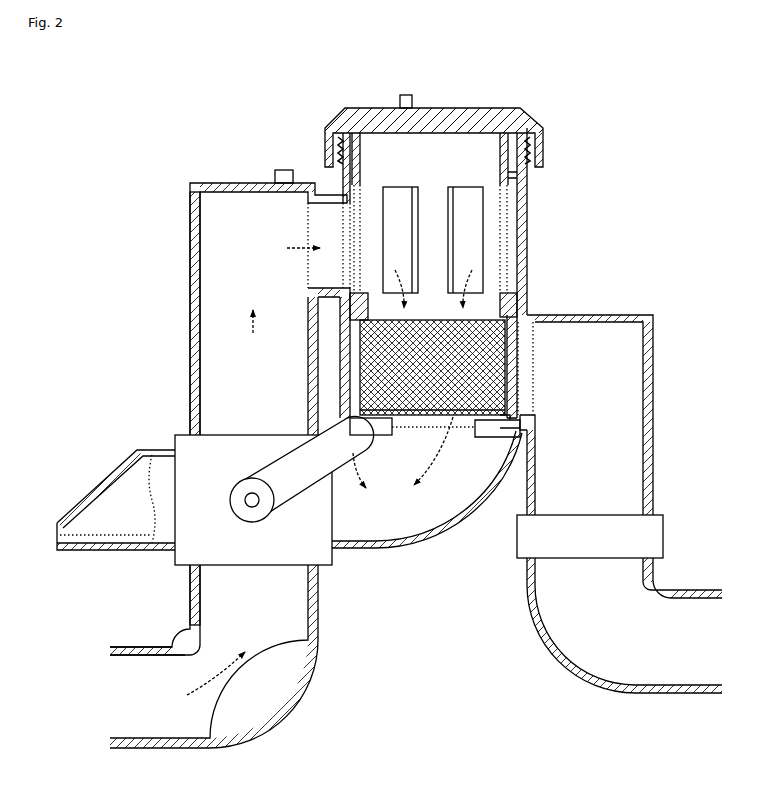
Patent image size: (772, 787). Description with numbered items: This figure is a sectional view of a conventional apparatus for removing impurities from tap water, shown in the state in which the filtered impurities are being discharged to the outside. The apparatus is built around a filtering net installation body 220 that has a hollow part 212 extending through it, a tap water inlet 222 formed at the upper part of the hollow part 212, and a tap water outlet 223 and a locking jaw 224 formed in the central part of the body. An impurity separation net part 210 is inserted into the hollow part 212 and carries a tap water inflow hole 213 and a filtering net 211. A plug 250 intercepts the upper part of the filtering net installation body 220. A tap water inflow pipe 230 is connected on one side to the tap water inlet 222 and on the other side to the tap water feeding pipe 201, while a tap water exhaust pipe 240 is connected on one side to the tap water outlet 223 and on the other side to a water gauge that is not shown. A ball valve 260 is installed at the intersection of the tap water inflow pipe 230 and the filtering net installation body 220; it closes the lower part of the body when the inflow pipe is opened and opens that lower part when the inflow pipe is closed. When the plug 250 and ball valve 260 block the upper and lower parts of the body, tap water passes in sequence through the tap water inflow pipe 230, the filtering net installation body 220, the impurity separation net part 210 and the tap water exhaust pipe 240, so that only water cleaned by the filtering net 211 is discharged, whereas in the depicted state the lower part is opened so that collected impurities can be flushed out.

The tap water feeding pipe 201 is at (187, 640).
The impurity separation net part 210 is at (461, 154).
The filtering net 211 is at (450, 440).
The hollow part 212 is at (424, 148).
The tap water inflow hole 213 is at (346, 237).
The filtering net installation body 220 is at (528, 250).
The tap water inlet 222 is at (331, 184).
The tap water outlet 223 is at (532, 311).
The locking jaw 224 is at (500, 440).
The tap water inflow pipe 230 is at (192, 260).
The tap water exhaust pipe 240 is at (654, 376).
The plug 250 is at (393, 95).
The ball valve 260 is at (215, 440).